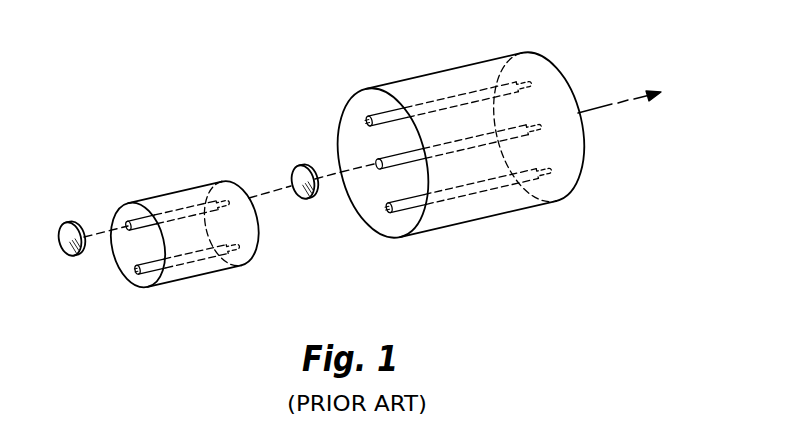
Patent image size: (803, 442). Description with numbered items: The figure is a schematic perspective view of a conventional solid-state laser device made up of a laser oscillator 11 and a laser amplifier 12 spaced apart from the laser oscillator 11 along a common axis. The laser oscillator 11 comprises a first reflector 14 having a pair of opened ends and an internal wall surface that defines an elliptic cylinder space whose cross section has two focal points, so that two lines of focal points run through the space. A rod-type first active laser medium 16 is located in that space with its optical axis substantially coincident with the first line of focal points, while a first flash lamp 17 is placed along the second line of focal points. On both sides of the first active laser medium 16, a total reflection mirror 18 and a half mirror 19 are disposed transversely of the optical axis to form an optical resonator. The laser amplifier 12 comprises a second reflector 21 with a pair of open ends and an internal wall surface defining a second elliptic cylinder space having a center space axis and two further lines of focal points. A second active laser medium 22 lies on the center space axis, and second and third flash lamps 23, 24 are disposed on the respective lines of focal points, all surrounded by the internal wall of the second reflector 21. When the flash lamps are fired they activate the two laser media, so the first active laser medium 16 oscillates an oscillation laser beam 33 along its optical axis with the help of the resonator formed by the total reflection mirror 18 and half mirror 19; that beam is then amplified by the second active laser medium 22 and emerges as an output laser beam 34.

The laser oscillator 11 is at (200, 306).
The laser amplifier 12 is at (512, 274).
The first reflector 14 is at (180, 192).
The first active laser medium 16 is at (132, 222).
The first flash lamp 17 is at (150, 273).
The total reflection mirror 18 is at (67, 223).
The half mirror 19 is at (302, 165).
The second reflector 21 is at (457, 72).
The second active laser medium 22 is at (397, 163).
The second flash lamp 23 is at (381, 115).
The third flash lamp 24 is at (410, 204).
The oscillation laser beam 33 is at (332, 177).
The output laser beam 34 is at (628, 103).